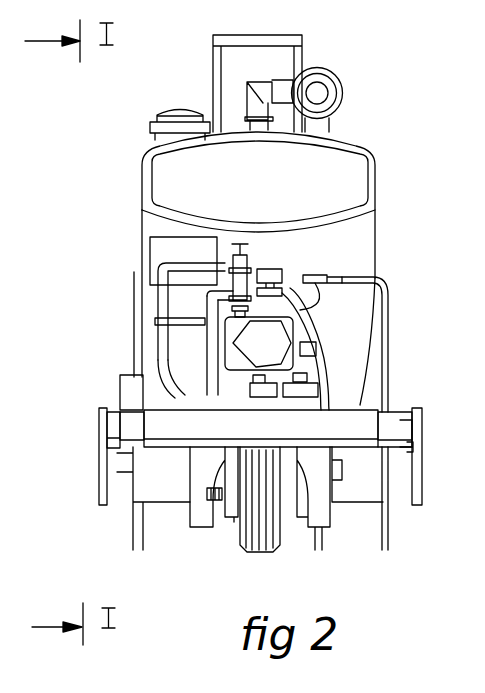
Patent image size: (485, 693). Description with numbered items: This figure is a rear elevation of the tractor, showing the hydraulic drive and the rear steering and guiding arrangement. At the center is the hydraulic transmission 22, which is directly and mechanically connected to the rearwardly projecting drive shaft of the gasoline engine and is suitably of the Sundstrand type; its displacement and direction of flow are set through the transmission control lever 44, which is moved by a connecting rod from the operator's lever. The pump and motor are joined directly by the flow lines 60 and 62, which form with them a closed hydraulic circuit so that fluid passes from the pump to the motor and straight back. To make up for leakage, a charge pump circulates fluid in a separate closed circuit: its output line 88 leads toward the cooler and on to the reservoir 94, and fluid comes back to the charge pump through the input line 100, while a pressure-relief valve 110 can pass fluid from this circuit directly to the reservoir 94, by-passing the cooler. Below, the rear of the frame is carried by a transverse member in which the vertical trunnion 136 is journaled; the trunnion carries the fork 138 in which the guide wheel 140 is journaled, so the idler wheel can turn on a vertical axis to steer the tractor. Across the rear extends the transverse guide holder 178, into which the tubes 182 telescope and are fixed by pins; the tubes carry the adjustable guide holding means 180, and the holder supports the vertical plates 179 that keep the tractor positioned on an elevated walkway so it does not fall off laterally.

The hydraulic transmission 22 is at (265, 350).
The transmission control lever 44 is at (322, 296).
The flow line 60 is at (158, 347).
The flow line 62 is at (322, 392).
The output line 88 is at (190, 378).
The reservoir 94 is at (160, 250).
The input line 100 is at (305, 317).
The pressure-relief valve 110 is at (247, 258).
The vertical trunnion 136 is at (222, 416).
The fork 138 is at (230, 518).
The guide wheel 140 is at (260, 552).
The transverse guide holder 178 is at (352, 422).
The vertical plate 179 is at (98, 493).
The guide holding means 180 is at (108, 433).
The tube 182 is at (130, 420).